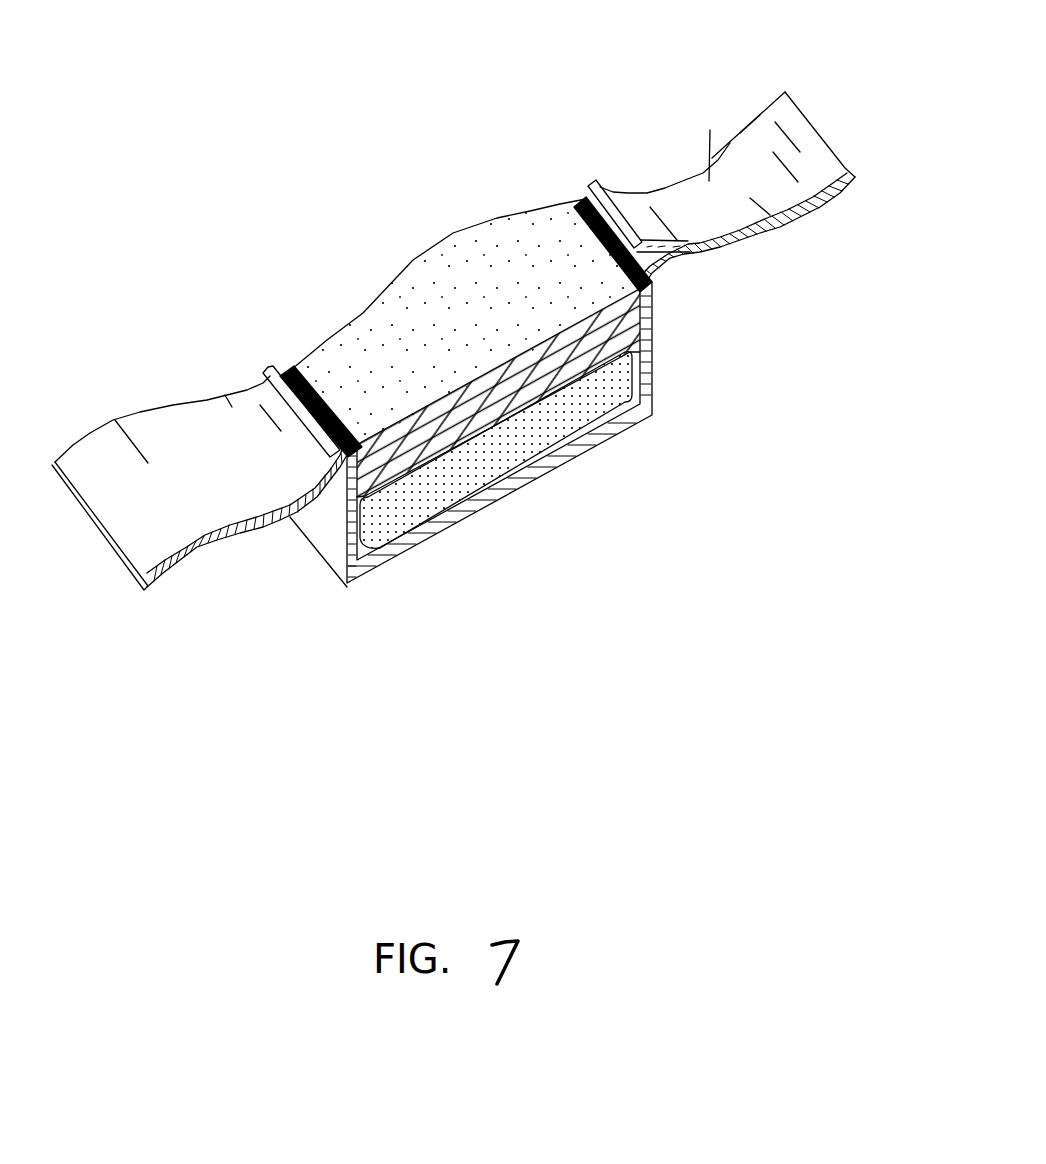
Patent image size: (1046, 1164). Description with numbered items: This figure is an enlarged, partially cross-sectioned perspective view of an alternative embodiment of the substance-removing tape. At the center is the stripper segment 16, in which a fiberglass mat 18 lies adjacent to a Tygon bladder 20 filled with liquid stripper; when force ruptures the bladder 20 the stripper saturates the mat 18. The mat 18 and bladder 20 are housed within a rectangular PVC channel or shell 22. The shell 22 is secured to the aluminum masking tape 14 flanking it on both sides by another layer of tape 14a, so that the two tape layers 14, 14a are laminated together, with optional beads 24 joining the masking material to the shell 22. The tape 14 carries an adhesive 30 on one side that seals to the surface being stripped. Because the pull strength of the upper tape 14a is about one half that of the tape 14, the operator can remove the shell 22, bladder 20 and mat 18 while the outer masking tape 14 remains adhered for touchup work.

The masking material strip 14 is at (140, 516).
The upper tape layer 14a is at (108, 706).
The stripper segment 16 is at (718, 437).
The fiberglass mat 18 is at (365, 482).
The bladder 20 is at (395, 510).
The shell 22 is at (633, 415).
The bead 24 is at (601, 181).
The adhesive 30 is at (710, 158).